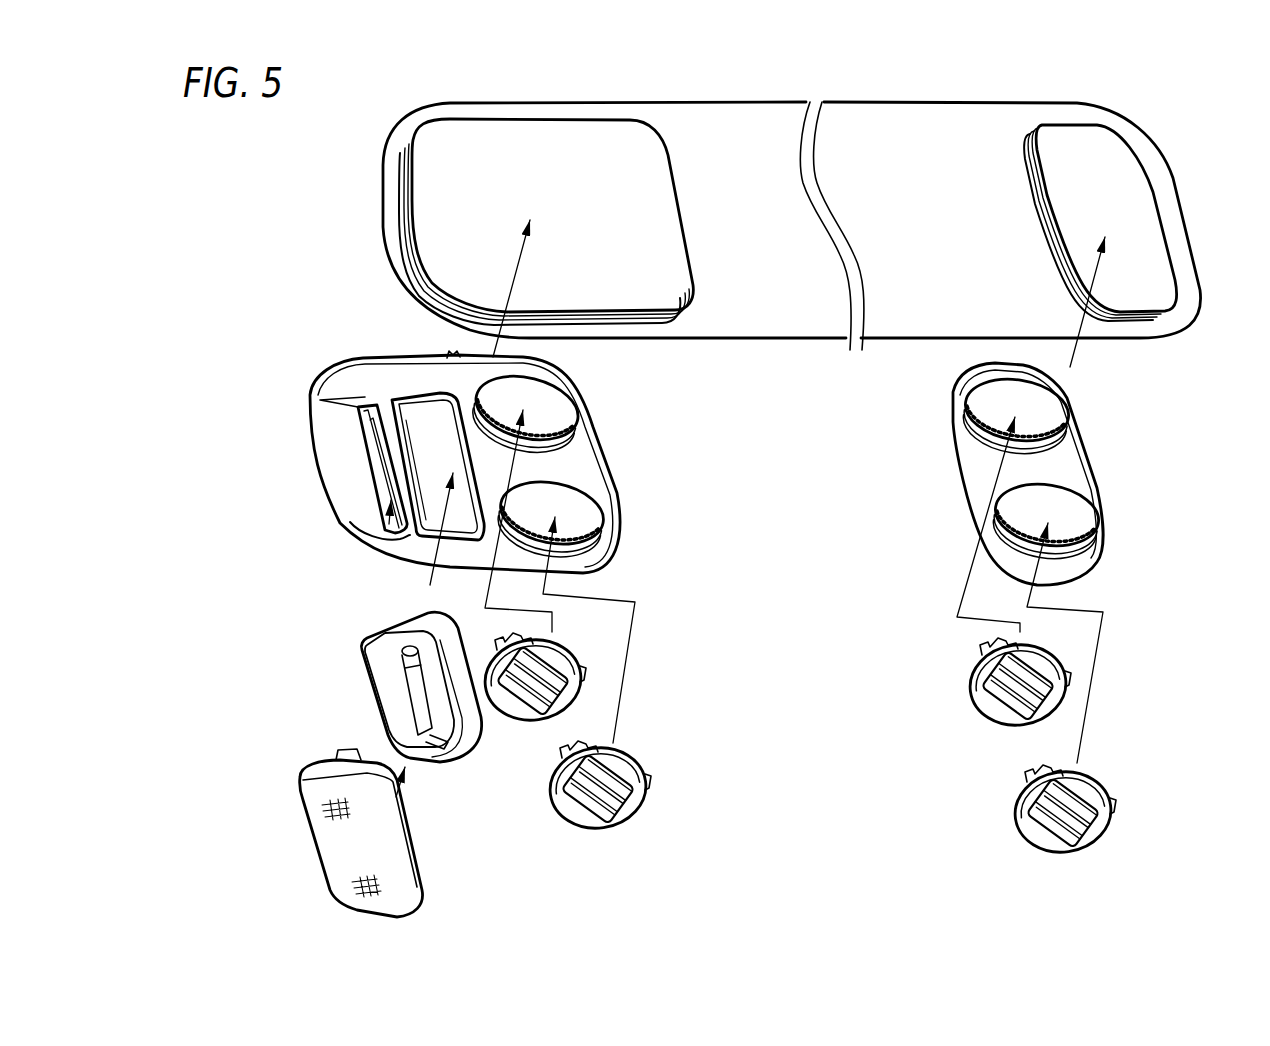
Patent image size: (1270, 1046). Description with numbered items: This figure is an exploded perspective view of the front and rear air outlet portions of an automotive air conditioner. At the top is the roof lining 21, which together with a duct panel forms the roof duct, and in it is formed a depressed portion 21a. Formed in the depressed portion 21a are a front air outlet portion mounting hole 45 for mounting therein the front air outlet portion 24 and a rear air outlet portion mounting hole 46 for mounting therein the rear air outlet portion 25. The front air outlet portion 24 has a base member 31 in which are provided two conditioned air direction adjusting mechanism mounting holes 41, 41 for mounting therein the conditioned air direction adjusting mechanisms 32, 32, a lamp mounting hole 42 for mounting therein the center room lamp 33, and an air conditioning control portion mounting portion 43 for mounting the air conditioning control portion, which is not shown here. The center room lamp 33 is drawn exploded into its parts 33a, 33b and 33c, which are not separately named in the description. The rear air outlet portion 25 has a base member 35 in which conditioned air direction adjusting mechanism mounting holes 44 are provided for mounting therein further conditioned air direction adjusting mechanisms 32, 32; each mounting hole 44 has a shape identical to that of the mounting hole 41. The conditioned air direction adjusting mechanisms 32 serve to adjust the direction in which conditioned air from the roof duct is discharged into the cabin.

The roof lining 21 is at (1148, 142).
The depressed portion 21a is at (805, 296).
The front air outlet portion mounting hole 45 is at (407, 190).
The rear air outlet portion mounting hole 46 is at (1130, 313).
The front air outlet portion 24 is at (417, 568).
The rear air outlet portion 25 is at (1058, 500).
The base member 31 is at (315, 383).
The lamp mounting hole 42 is at (417, 433).
The air conditioning control portion mounting portion 43 is at (380, 538).
The conditioned air direction adjusting mechanism mounting holes 41 is at (573, 450).
The conditioned air direction adjusting mechanism mounting hole 44 is at (977, 447).
The base member 35 is at (1093, 457).
The conditioned air direction adjusting mechanisms 32 is at (517, 721).
The center room lamp 33 is at (326, 764).
The bulb 33a is at (403, 700).
The lamp socket housing 33b is at (437, 757).
The lamp lens 33c is at (302, 850).